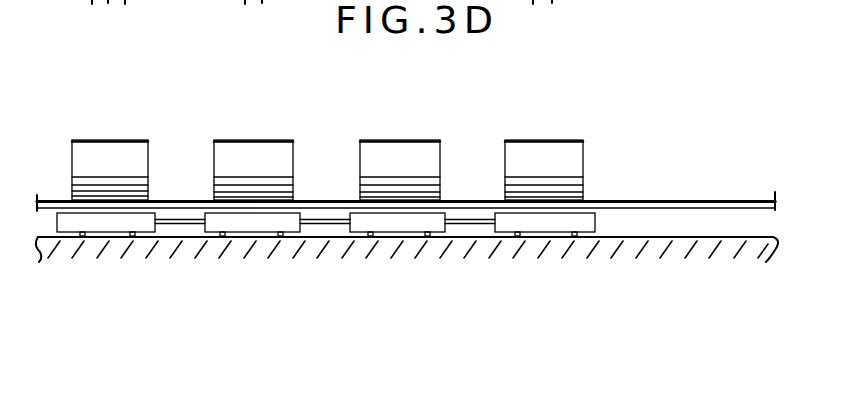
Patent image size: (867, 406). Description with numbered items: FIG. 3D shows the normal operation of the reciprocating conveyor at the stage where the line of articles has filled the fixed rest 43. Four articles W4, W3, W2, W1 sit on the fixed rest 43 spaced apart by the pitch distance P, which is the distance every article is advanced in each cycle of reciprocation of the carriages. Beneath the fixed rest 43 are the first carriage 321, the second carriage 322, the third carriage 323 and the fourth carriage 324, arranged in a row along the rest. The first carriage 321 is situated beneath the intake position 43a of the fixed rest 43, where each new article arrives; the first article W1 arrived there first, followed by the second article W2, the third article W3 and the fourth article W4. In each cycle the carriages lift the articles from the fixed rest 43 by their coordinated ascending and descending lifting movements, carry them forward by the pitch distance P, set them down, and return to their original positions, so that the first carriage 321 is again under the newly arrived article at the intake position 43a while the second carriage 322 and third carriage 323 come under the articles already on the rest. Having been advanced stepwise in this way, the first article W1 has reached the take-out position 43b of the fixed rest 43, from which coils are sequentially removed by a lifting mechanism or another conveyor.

The pitch distance P is at (692, 92).
The fixed rest 43 is at (464, 200).
The intake position 43a is at (117, 200).
The take-out position 43b is at (636, 200).
The first article W1 is at (588, 147).
The second article W2 is at (428, 150).
The third article W3 is at (290, 148).
The fourth article W4 is at (66, 150).
The first carriage 321 is at (105, 237).
The second carriage 322 is at (252, 237).
The third carriage 323 is at (400, 244).
The fourth carriage 324 is at (549, 237).